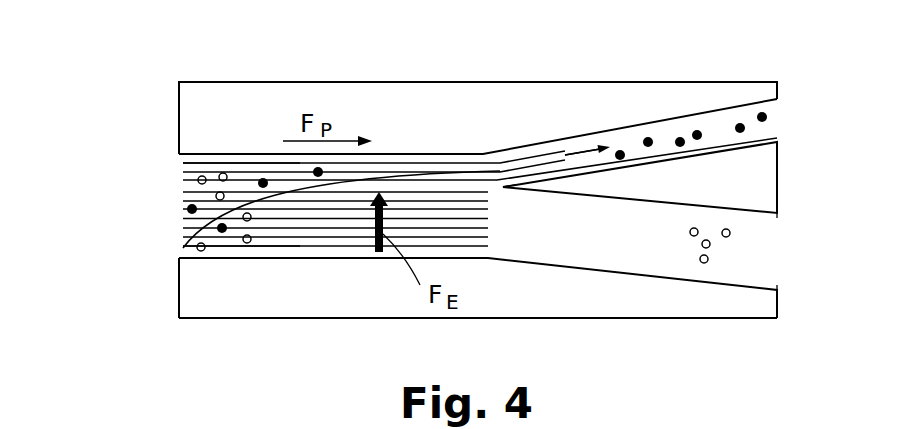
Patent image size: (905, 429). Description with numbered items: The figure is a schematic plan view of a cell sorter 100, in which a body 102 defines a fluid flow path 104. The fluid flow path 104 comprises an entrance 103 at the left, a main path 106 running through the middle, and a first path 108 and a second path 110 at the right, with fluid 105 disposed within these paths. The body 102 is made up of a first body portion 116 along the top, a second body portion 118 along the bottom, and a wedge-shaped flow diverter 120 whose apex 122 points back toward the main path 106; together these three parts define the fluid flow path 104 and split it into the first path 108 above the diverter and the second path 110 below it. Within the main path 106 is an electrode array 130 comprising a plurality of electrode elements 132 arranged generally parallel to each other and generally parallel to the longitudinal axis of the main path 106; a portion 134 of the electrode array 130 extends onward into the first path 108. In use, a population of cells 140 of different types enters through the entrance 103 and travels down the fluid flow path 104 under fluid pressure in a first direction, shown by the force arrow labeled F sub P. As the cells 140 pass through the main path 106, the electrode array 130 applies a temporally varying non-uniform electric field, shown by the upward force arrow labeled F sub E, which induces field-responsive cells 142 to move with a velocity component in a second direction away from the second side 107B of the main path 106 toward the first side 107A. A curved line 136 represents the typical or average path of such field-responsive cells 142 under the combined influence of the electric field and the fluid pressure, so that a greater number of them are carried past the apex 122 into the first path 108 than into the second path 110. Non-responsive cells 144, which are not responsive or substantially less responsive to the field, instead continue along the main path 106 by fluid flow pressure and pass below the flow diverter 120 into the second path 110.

The sorter 100 is at (421, 72).
The body 102 is at (603, 90).
The entrance 103 is at (180, 180).
The fluid flow path 104 is at (165, 252).
The fluid 105 is at (653, 240).
The main path 106 is at (297, 268).
The first side 107A is at (178, 162).
The second side 107B is at (210, 262).
The first path 108 is at (733, 110).
The second path 110 is at (747, 257).
The first body portion 116 is at (493, 97).
The second body portion 118 is at (545, 293).
The flow diverter 120 is at (778, 176).
The apex 122 is at (507, 190).
The electrode array 130 is at (168, 194).
The electrode elements 132 is at (183, 212).
The portion of electrode array 134 is at (530, 150).
The line 136 is at (182, 224).
The cells 140 is at (227, 152).
The field-responsive cells 142 is at (697, 120).
The non-responsive cells 144 is at (748, 234).